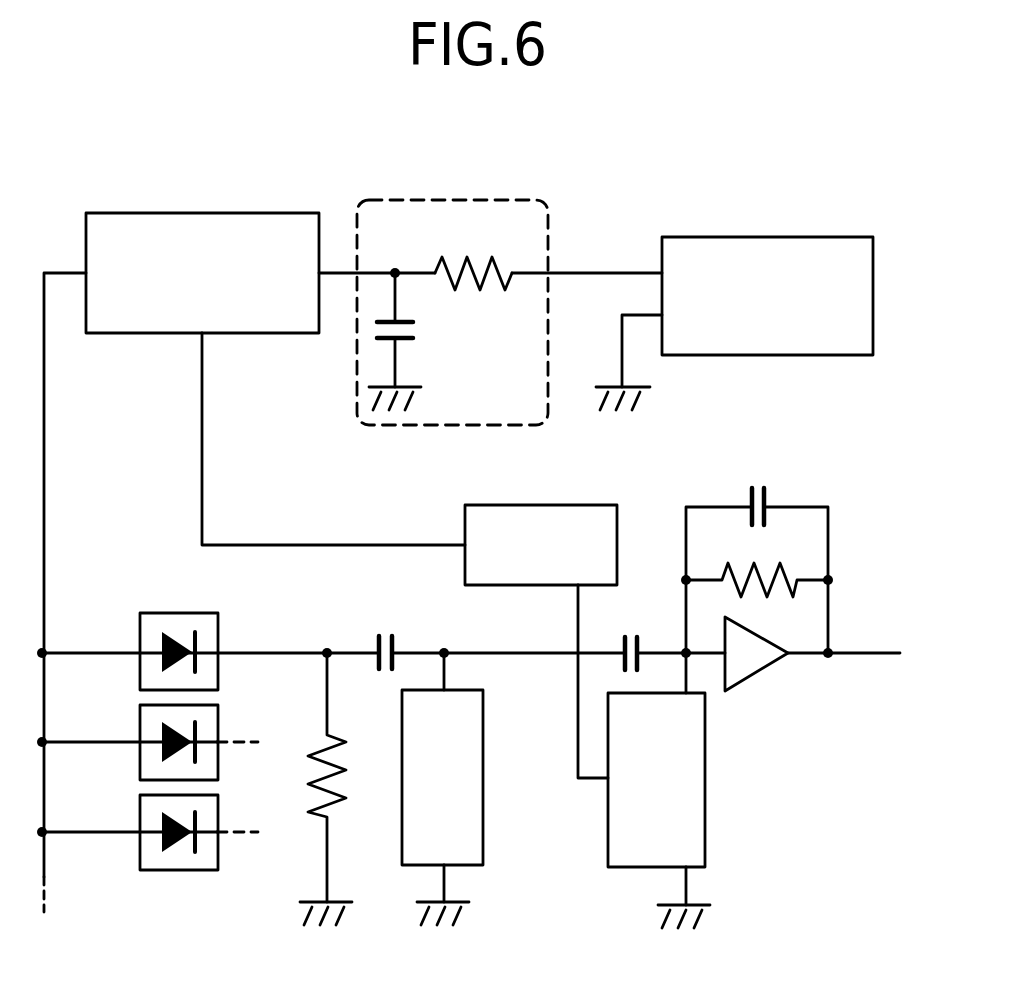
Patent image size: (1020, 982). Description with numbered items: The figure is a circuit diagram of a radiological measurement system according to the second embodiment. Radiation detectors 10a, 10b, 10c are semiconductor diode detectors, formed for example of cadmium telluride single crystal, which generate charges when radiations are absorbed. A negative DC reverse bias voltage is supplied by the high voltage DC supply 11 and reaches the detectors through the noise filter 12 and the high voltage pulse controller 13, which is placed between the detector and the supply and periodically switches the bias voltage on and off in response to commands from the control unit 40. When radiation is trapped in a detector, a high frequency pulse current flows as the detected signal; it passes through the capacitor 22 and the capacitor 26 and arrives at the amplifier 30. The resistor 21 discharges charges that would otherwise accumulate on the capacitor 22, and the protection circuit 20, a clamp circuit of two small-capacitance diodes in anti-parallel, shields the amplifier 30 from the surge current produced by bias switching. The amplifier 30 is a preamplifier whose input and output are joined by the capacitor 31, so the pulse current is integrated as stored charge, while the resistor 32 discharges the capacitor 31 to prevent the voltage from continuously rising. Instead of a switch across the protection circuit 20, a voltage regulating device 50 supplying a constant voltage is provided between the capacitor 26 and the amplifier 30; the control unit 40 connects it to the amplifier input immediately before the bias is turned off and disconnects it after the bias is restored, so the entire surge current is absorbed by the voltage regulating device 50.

The radiation detector 10a is at (175, 613).
The radiation detector 10b is at (138, 758).
The radiation detector 10c is at (178, 872).
The high voltage DC supply 11 is at (770, 237).
The noise filter 12 is at (445, 200).
The high voltage pulse controller 13 is at (203, 213).
The protection circuit 20 is at (402, 820).
The resistor 21 is at (308, 798).
The capacitor 22 is at (388, 635).
The capacitor 26 is at (638, 632).
The amplifier 30 is at (760, 675).
The capacitor 31 is at (760, 487).
The resistor 32 is at (785, 566).
The control unit 40 is at (545, 505).
The voltage regulating device 50 is at (705, 820).